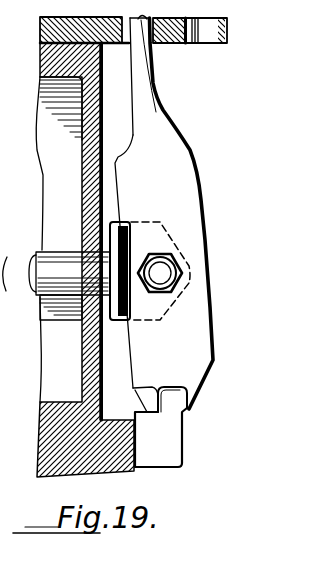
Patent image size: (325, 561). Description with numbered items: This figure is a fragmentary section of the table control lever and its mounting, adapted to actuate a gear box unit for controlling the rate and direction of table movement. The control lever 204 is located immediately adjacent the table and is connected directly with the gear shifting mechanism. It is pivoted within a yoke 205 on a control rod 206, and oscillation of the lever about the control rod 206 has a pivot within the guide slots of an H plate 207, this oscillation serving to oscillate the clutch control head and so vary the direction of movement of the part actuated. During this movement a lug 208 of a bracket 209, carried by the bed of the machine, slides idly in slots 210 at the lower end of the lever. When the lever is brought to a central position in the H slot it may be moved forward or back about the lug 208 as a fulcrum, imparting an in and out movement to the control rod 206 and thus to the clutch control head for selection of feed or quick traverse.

The control lever 204 is at (149, 113).
The yoke 205 is at (120, 355).
The control rod 206 is at (37, 297).
The H plate 207 is at (178, 44).
The lug 208 is at (178, 408).
The bracket 209 is at (172, 457).
The slots 210 is at (133, 388).